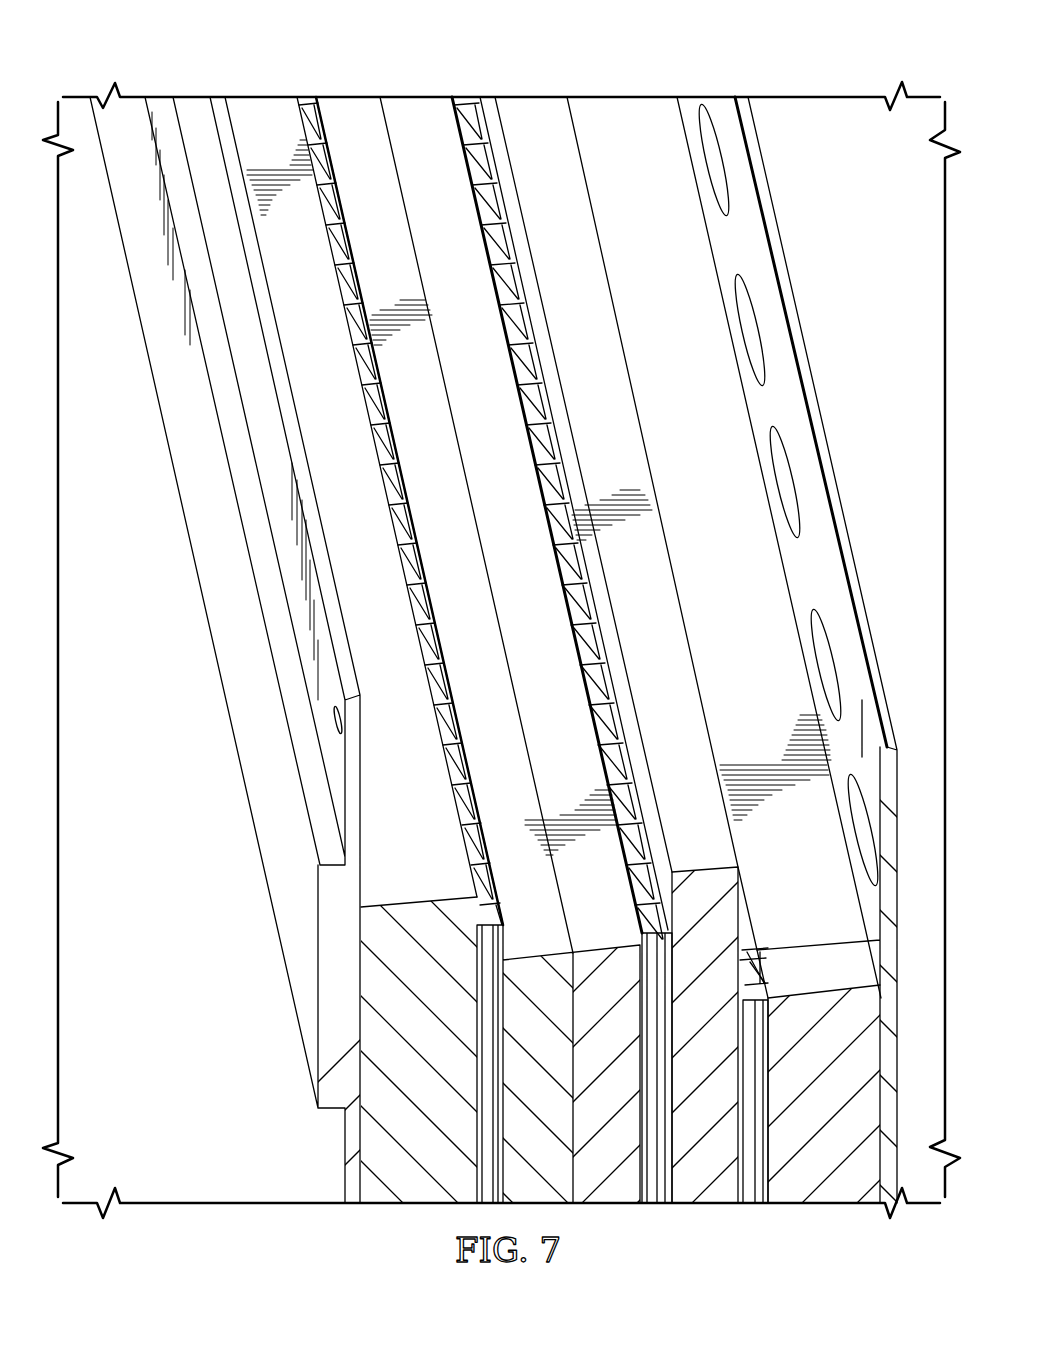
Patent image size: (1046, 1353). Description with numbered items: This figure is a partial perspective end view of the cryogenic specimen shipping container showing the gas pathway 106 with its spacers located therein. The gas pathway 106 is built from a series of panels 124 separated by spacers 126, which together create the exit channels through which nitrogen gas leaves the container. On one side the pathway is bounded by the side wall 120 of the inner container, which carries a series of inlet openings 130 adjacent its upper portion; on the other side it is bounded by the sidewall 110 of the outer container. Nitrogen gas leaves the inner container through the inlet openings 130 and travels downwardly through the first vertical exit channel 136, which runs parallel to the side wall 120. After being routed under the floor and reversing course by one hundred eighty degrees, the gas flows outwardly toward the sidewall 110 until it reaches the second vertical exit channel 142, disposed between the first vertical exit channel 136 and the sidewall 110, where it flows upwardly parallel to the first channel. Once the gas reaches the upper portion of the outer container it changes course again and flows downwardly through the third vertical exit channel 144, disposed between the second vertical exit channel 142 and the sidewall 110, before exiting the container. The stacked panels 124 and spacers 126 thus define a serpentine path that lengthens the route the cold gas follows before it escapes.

The gas pathway 106 is at (818, 316).
The sidewall 110 is at (345, 1137).
The side wall 120 is at (523, 698).
The panel 124 is at (358, 105).
The spacer 126 is at (530, 651).
The inlet opening 130 is at (750, 322).
The first vertical exit channel 136 is at (758, 948).
The second vertical exit channel 142 is at (577, 580).
The third vertical exit channel 144 is at (433, 693).